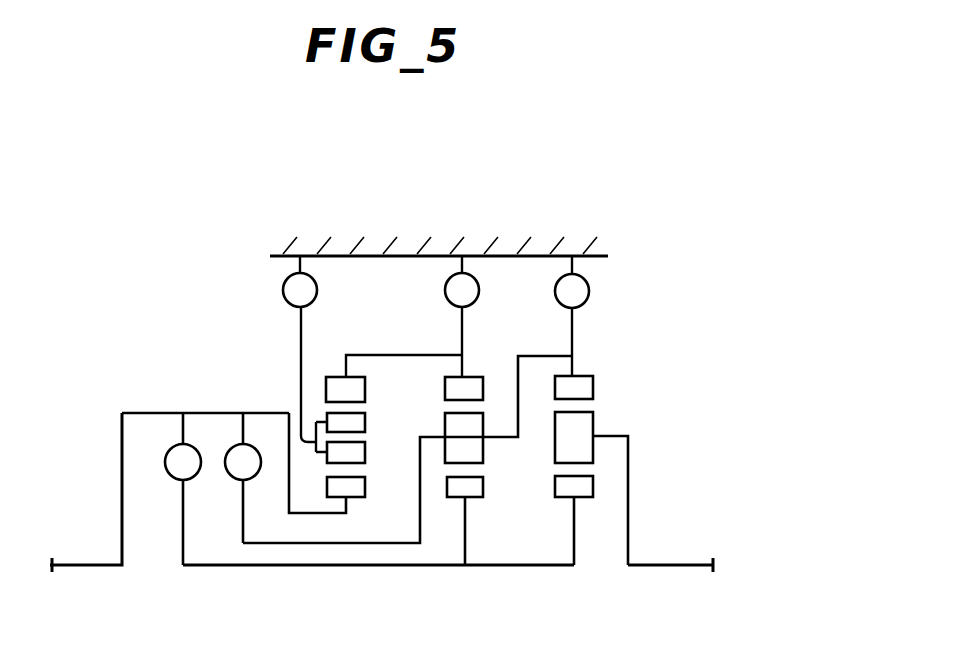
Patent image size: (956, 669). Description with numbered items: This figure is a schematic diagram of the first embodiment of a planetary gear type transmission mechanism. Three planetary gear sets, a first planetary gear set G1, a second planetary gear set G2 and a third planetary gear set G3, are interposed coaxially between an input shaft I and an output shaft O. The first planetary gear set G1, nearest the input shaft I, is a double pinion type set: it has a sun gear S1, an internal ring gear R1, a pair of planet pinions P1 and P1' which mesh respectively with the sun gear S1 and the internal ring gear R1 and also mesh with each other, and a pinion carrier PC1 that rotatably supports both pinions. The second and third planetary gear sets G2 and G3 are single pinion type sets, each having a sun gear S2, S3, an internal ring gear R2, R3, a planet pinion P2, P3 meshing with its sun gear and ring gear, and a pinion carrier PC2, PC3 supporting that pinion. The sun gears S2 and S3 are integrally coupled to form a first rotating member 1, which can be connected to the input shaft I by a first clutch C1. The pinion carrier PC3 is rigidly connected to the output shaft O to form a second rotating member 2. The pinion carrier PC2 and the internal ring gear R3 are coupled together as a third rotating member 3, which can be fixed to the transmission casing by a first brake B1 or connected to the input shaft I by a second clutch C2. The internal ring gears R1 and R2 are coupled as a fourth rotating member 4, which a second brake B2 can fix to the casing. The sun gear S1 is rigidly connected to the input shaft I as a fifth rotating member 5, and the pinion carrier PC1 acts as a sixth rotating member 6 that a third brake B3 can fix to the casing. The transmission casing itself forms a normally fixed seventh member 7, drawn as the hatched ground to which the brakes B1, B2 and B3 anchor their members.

The first rotating member 1 is at (442, 570).
The second rotating member 2 is at (633, 526).
The third rotating member 3 is at (578, 339).
The fourth rotating member 4 is at (466, 331).
The fifth rotating member 5 is at (251, 411).
The sixth rotating member 6 is at (298, 317).
The seventh member 7 is at (410, 244).
The first brake B1 is at (589, 292).
The second brake B2 is at (445, 292).
The third brake B3 is at (317, 290).
The first clutch C1 is at (175, 479).
The second clutch C2 is at (236, 479).
The internal ring gear R1 is at (332, 376).
The internal ring gear R2 is at (482, 377).
The internal ring gear R3 is at (593, 386).
The planet pinion P1 is at (361, 458).
The planet pinion P1' is at (367, 410).
The planet pinion P2 is at (483, 422).
The planet pinion P3 is at (593, 420).
The pinion carrier PC1 is at (298, 440).
The pinion carrier PC2 is at (500, 438).
The pinion carrier PC3 is at (616, 437).
The sun gear S1 is at (365, 488).
The sun gear S2 is at (457, 498).
The sun gear S3 is at (593, 485).
The first planetary gear set G1 is at (357, 512).
The second planetary gear set G2 is at (486, 508).
The third planetary gear set G3 is at (582, 522).
The input shaft I is at (76, 564).
The output shaft O is at (685, 564).